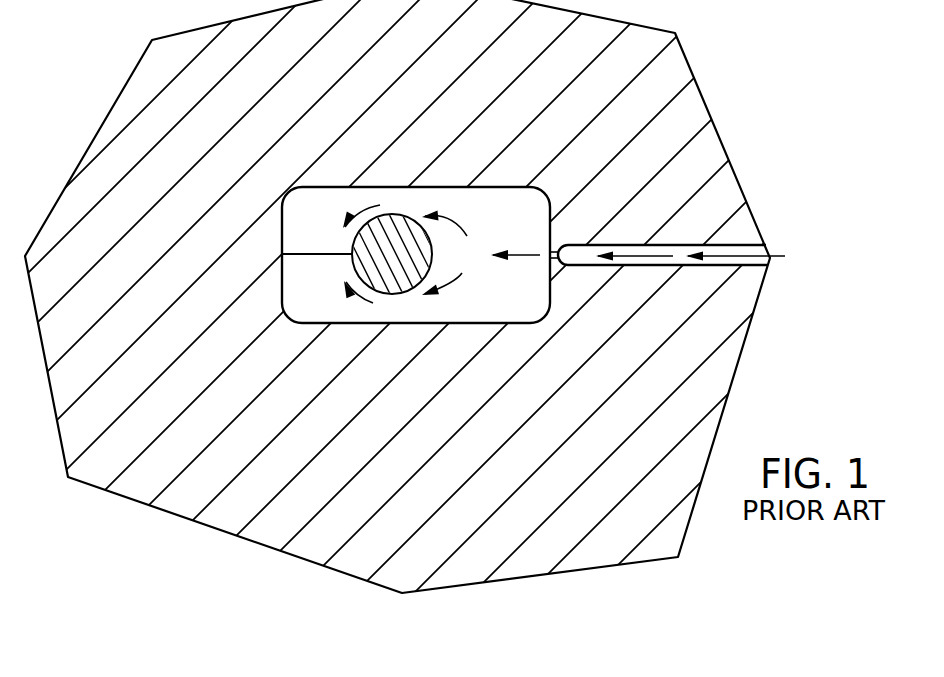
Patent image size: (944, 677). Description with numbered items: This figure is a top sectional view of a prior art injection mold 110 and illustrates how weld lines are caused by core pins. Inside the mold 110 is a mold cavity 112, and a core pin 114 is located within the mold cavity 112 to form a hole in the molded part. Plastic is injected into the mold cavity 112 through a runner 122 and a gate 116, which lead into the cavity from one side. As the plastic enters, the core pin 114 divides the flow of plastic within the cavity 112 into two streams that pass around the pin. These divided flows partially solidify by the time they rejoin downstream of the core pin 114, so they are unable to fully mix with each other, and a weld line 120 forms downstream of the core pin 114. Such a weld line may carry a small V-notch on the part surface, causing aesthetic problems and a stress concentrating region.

The mold 110 is at (700, 92).
The mold cavity 112 is at (524, 229).
The core pin 114 is at (394, 215).
The gate 116 is at (549, 277).
The weld line 120 is at (299, 252).
The runner 122 is at (710, 262).